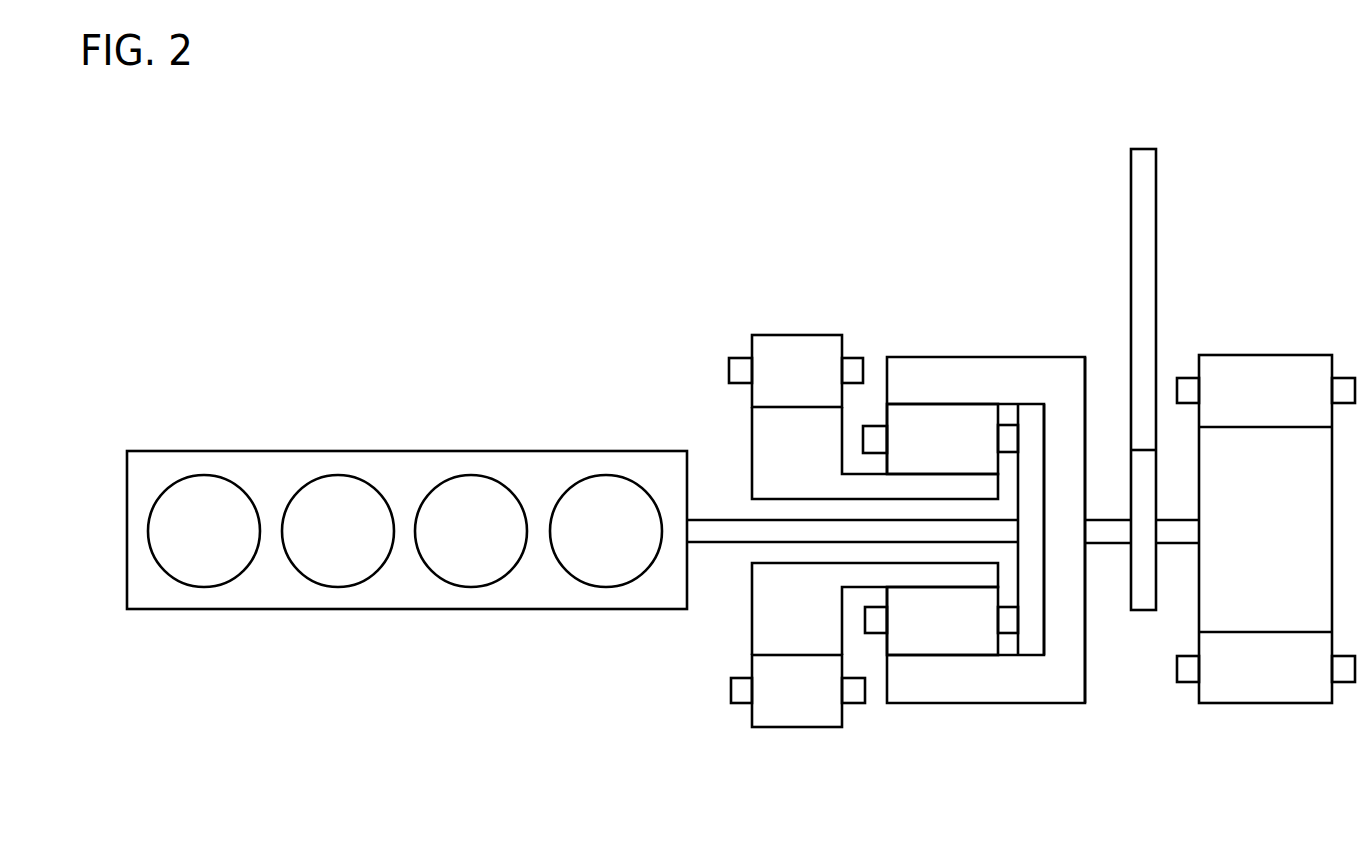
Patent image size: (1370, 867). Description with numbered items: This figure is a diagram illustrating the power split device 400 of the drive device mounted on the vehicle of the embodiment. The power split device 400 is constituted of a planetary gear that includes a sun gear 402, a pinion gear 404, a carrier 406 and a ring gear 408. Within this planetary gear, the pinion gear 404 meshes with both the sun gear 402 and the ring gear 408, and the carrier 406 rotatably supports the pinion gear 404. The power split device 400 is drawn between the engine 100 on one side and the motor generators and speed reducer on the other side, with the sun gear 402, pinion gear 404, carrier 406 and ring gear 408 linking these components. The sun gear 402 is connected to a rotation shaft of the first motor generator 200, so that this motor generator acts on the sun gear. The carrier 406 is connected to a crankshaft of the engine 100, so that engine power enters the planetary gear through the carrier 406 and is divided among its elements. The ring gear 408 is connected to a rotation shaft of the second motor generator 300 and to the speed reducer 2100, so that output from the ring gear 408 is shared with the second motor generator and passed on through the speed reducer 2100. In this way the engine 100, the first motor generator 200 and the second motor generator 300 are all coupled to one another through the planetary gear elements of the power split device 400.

The engine 100 is at (408, 450).
The MG (1) 200 is at (800, 335).
The MG (2) 300 is at (1263, 353).
The power split device 400 is at (990, 317).
The sun gear 402 is at (925, 588).
The pinion gear 404 is at (960, 656).
The carrier 406 is at (1017, 570).
The ring gear 408 is at (1042, 703).
The speed reducer 2100 is at (1147, 148).